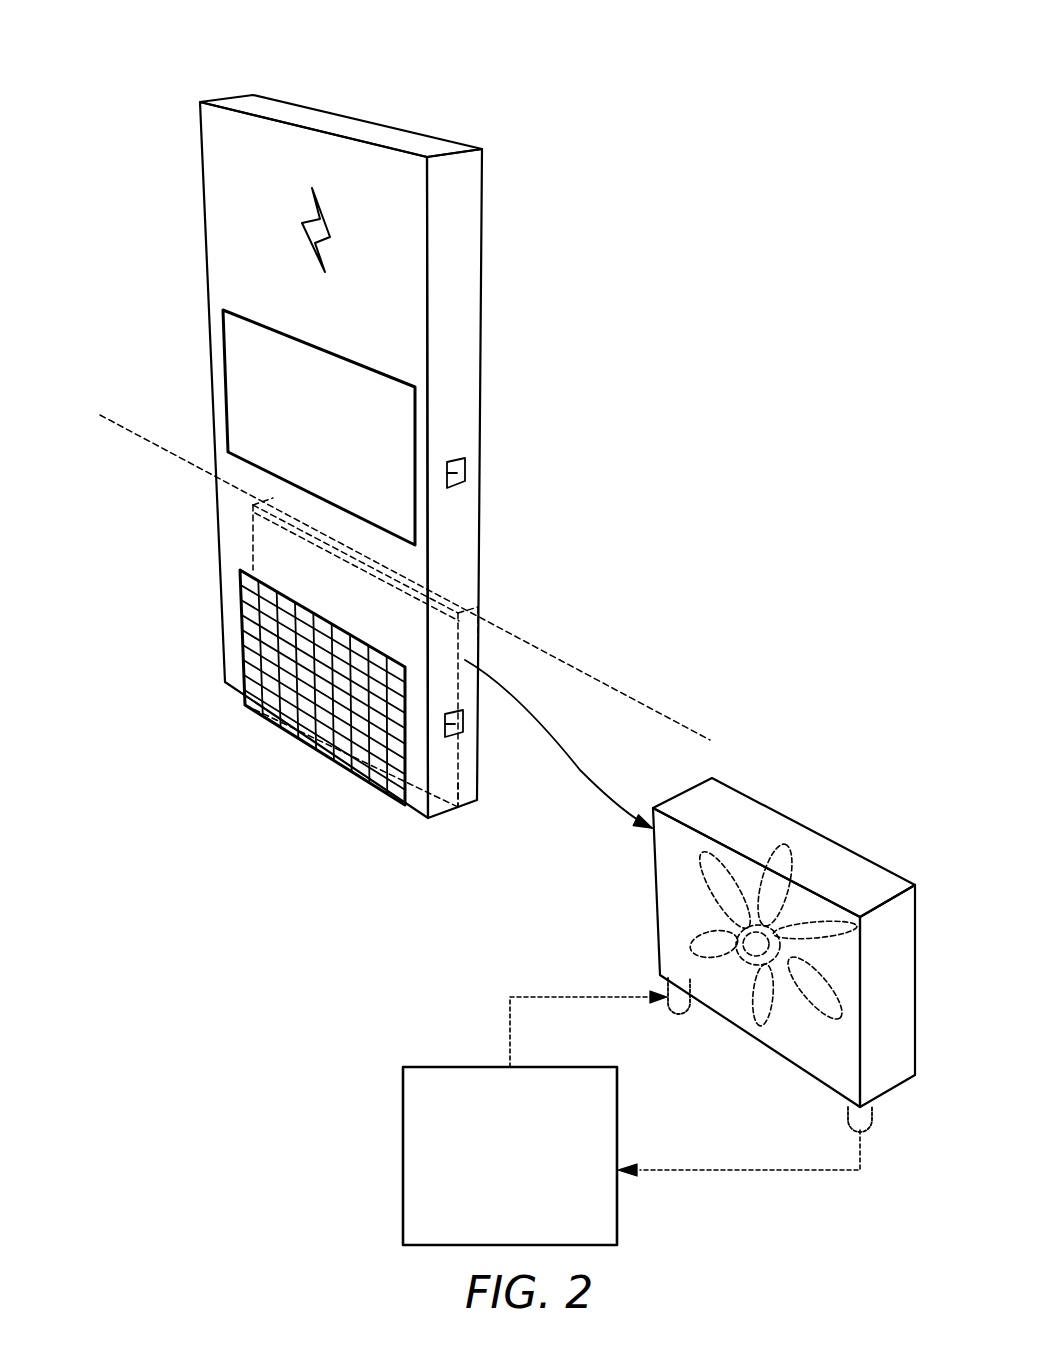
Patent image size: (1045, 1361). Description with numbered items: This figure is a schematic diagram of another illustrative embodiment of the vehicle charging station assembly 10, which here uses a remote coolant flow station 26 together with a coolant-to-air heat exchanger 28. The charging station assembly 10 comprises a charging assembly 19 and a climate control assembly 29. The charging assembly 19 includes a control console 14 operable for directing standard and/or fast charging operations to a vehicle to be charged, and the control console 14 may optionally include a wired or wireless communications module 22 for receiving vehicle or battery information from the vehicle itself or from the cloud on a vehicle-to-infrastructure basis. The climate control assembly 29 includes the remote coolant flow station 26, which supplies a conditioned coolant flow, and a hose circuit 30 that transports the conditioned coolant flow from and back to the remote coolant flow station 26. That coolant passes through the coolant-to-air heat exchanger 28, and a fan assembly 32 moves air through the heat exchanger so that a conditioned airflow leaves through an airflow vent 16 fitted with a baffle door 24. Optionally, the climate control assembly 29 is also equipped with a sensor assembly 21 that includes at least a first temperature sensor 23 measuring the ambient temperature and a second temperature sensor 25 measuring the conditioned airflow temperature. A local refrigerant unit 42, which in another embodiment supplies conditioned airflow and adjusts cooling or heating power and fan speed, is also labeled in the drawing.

The vehicle charging station assembly 10 is at (455, 415).
The control console 14 is at (338, 128).
The charging assembly 19 is at (172, 212).
The climate control assembly 29 is at (185, 636).
The airflow vent 16 is at (232, 658).
The baffle door 24 is at (258, 608).
The communications module 22 is at (465, 473).
The sensor assembly 21 is at (405, 644).
The first temperature sensor 23 is at (454, 723).
The second temperature sensor 25 is at (463, 724).
The local refrigerant unit 42 is at (457, 783).
The coolant-to-air heat exchanger 28 is at (784, 911).
The fan assembly 32 is at (783, 857).
The hose circuit 30 is at (685, 1074).
The remote coolant flow station 26 is at (510, 1156).